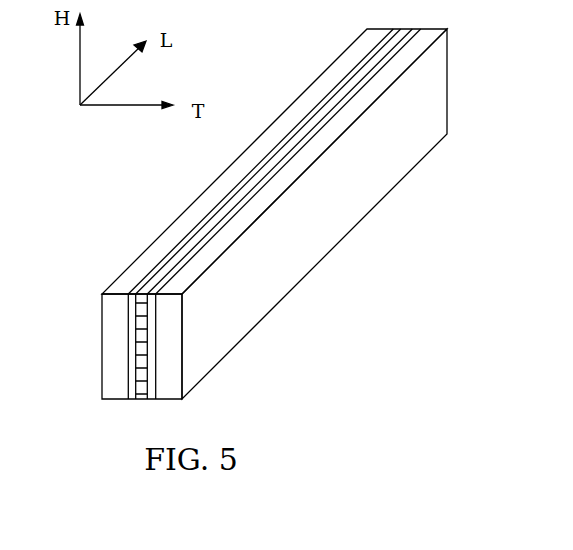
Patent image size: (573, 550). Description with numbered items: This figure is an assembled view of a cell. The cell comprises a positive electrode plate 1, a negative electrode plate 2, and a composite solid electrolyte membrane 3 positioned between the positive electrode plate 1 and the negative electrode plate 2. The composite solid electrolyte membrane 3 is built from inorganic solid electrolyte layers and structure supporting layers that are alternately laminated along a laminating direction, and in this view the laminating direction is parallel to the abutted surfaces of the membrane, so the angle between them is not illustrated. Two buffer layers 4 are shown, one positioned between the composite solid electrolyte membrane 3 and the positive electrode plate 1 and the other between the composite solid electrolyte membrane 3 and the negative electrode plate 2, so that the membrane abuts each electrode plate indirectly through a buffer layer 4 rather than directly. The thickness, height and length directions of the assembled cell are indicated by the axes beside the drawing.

The positive electrode plate 1 is at (150, 263).
The negative electrode plate 2 is at (325, 188).
The composite solid electrolyte membrane 3 is at (223, 213).
The buffer layer 4 is at (275, 155).